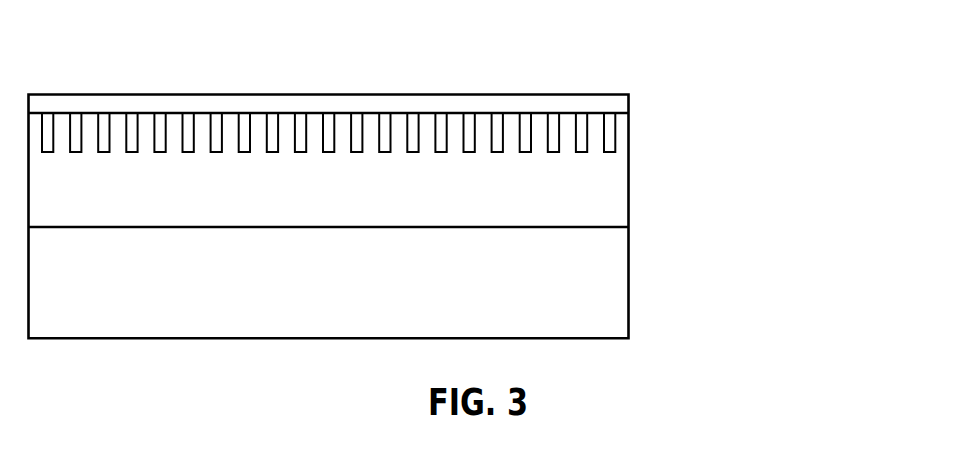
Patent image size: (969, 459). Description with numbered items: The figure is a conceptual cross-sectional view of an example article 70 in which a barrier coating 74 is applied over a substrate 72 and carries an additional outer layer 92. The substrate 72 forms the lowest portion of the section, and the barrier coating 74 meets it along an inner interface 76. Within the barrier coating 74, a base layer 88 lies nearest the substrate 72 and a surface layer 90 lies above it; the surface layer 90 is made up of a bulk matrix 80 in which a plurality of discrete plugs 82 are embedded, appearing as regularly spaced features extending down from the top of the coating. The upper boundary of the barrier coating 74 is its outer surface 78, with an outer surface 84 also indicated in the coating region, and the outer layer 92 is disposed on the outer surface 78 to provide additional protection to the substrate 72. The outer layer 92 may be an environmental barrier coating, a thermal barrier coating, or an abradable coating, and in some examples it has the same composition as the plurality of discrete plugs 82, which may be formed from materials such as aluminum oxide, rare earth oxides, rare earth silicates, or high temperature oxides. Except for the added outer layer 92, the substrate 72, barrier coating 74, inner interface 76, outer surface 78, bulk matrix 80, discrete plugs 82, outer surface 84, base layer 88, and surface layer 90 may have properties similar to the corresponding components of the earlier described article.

The article 70 is at (754, 43).
The substrate 72 is at (647, 230).
The barrier coating 74 is at (722, 113).
The inner interface 76 is at (517, 227).
The outer surface 78 is at (402, 113).
The bulk matrix 80 is at (515, 113).
The plurality of discrete plugs 82 is at (610, 114).
The outer surface 84 is at (300, 113).
The base layer 88 is at (647, 152).
The surface layer 90 is at (647, 113).
The outer layer 92 is at (647, 94).